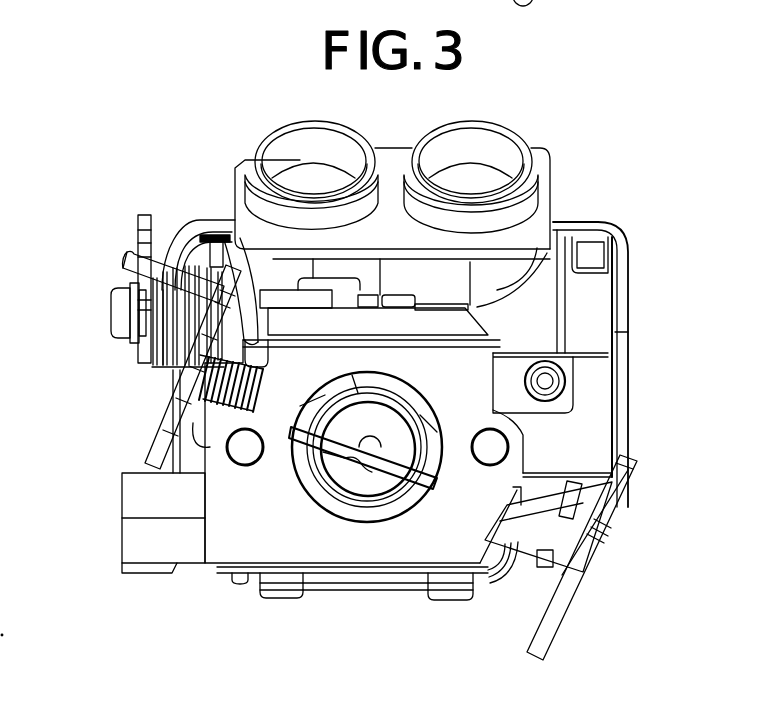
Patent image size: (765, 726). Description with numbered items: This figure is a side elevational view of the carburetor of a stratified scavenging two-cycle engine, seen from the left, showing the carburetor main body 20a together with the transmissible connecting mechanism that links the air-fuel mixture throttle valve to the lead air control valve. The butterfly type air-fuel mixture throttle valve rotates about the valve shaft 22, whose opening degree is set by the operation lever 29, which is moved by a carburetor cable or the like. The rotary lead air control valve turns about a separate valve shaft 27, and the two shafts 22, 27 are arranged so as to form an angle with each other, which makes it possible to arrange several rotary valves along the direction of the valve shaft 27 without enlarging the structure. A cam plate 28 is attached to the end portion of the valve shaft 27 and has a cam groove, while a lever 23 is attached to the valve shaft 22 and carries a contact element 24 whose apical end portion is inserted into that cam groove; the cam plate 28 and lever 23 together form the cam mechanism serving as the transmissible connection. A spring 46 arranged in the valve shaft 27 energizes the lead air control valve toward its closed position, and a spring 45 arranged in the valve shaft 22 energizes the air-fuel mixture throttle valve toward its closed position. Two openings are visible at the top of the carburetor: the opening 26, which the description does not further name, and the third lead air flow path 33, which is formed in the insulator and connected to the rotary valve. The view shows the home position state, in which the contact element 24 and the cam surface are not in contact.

The carburetor main body 20a is at (365, 616).
The valve shaft 22 is at (544, 529).
The lever 23 is at (160, 450).
The contact element 24 is at (124, 262).
The intake passage 26 is at (312, 175).
The valve shaft 27 is at (113, 312).
The cam plate 28 is at (143, 215).
The operation lever 29 is at (556, 619).
The third lead air flow path 33 is at (472, 170).
The spring 45 is at (196, 440).
The spring 46 is at (192, 218).